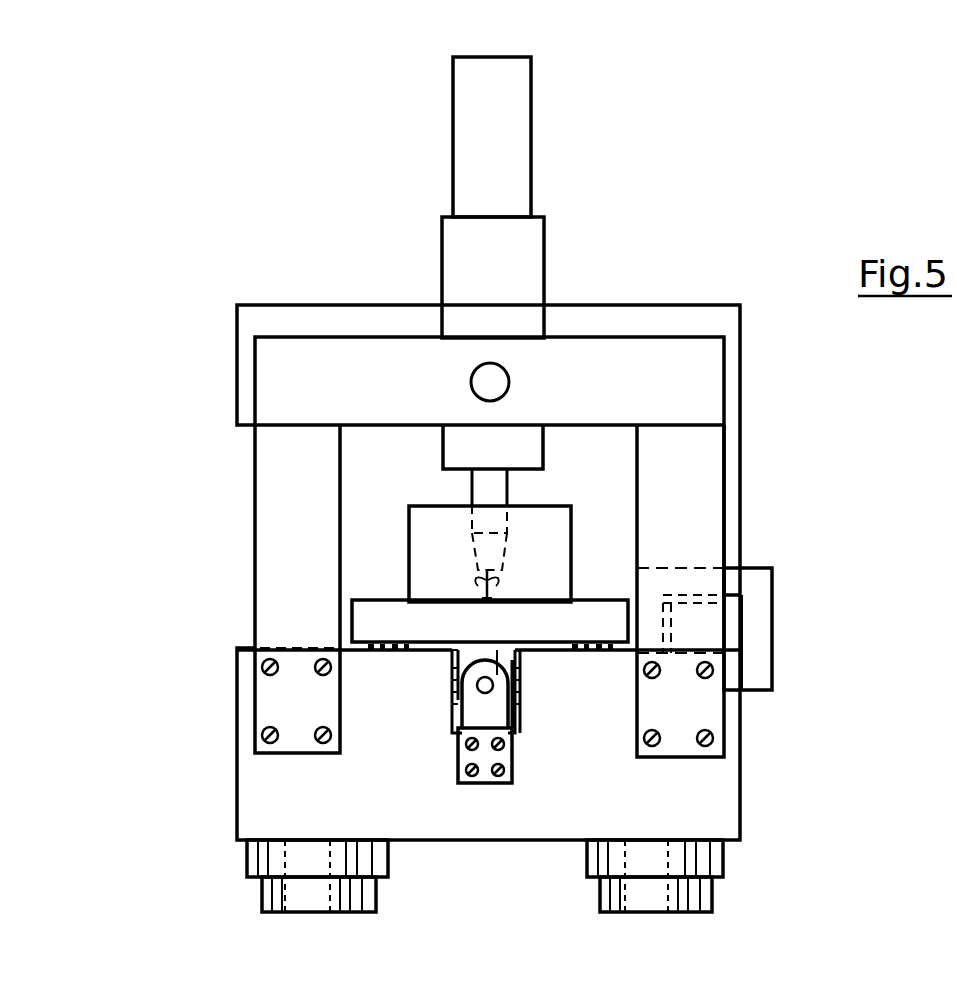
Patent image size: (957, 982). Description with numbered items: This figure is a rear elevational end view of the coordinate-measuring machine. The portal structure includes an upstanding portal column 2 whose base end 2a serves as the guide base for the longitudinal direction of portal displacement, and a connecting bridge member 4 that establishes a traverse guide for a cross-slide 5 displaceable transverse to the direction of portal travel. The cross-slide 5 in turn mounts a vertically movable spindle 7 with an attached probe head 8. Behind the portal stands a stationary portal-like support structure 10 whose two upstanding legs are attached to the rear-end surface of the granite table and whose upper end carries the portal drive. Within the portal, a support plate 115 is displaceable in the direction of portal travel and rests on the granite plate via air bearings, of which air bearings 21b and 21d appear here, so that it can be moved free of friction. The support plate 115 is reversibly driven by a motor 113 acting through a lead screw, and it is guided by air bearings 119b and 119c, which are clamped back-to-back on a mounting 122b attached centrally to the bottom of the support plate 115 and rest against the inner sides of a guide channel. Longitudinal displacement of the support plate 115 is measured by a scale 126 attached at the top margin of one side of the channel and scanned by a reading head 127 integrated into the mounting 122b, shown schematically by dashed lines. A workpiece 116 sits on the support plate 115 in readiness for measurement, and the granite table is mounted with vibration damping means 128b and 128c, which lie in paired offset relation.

The portal column 2 is at (742, 510).
The base end of the portal column 2a is at (772, 625).
The bridge member 4 is at (660, 318).
The cross-slide 5 is at (518, 152).
The spindle 7 is at (497, 483).
The probe head 8 is at (406, 486).
The support structure 10 is at (275, 380).
The air bearing 21b is at (593, 657).
The air bearing 21d is at (348, 623).
The motor 113 is at (487, 708).
The support plate 115 is at (360, 613).
The workpiece 116 is at (558, 512).
The air bearing 119b is at (455, 690).
The air bearing 119c is at (522, 690).
The mounting 122b is at (473, 642).
The scale 126 is at (522, 655).
The reading head 127 is at (503, 650).
The vibration damping means 128b is at (262, 898).
The vibration damping means 128c is at (712, 896).